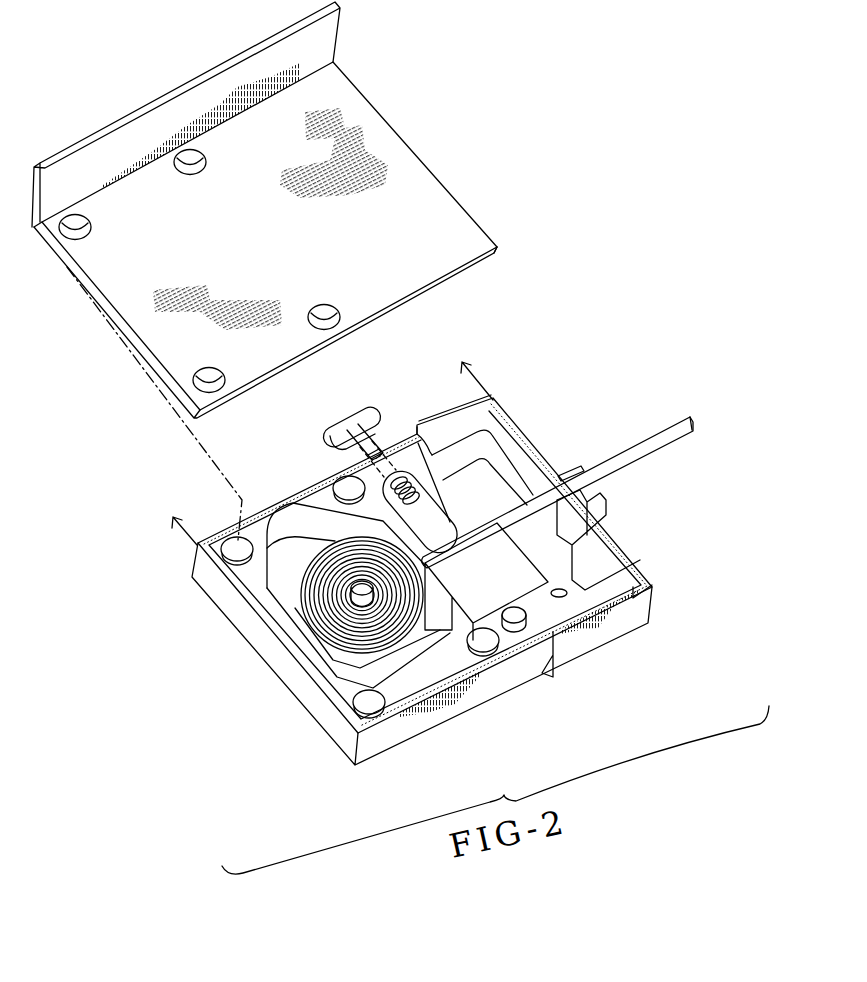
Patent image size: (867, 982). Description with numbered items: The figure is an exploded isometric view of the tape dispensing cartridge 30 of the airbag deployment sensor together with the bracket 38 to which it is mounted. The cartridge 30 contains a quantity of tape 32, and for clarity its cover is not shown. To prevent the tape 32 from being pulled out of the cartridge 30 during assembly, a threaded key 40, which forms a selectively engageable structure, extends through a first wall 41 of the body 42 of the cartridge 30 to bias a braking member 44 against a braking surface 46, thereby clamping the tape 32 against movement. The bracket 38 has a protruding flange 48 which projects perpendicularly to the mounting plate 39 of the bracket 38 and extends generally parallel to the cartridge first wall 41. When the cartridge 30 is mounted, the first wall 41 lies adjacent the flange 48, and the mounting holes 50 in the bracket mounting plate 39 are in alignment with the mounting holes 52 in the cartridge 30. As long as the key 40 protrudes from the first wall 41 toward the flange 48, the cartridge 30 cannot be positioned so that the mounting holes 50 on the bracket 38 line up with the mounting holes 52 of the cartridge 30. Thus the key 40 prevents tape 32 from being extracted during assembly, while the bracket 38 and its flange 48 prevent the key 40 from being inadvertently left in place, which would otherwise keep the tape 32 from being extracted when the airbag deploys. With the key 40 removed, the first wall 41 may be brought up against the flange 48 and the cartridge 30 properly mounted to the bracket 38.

The airbag deployment sensor cartridge 30 is at (653, 608).
The tape 32 is at (648, 437).
The bracket 38 is at (408, 145).
The mounting plate 39 is at (460, 218).
The threaded key 40 is at (352, 427).
The first wall 41 is at (285, 500).
The body 42 is at (398, 437).
The braking member 44 is at (433, 523).
The braking surface 46 is at (437, 555).
The flange 48 is at (212, 70).
The mounting holes 50 is at (86, 226).
The mounting holes 52 is at (230, 548).